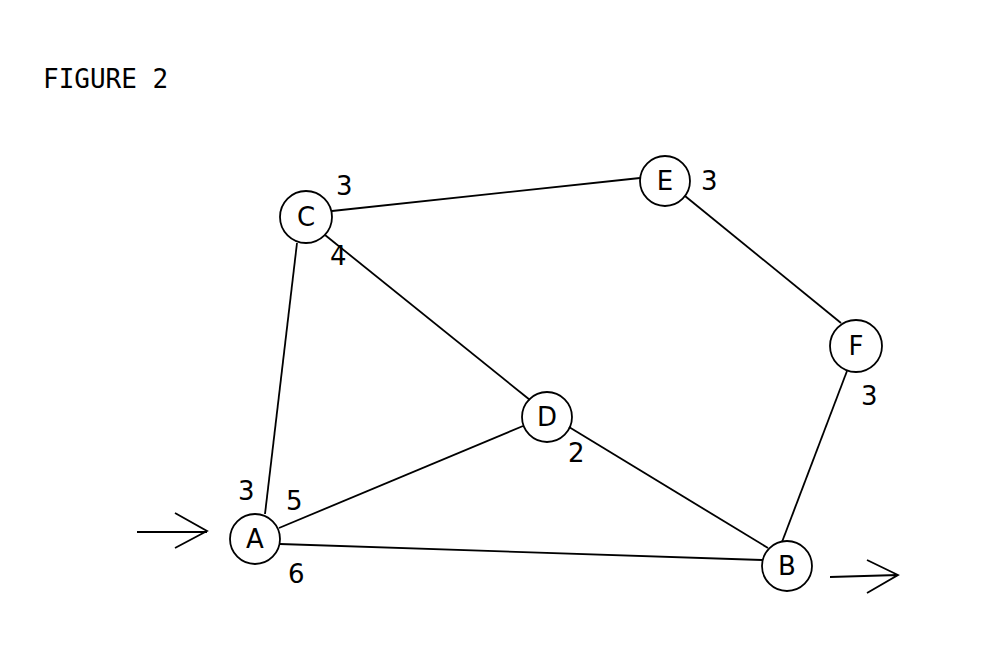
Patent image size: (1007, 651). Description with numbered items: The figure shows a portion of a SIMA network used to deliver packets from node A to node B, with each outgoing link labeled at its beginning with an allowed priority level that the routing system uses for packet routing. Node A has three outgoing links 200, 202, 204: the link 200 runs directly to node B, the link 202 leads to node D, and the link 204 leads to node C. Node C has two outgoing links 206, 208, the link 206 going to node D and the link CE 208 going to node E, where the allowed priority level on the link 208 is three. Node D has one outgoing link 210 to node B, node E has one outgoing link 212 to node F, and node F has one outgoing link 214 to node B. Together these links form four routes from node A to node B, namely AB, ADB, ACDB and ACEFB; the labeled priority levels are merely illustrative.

The outgoing link 200 is at (502, 553).
The outgoing link 202 is at (412, 473).
The outgoing link 204 is at (280, 398).
The outgoing link 206 is at (442, 310).
The outgoing link 208 is at (463, 195).
The outgoing link 210 is at (693, 500).
The outgoing link 212 is at (737, 228).
The outgoing link 214 is at (805, 477).